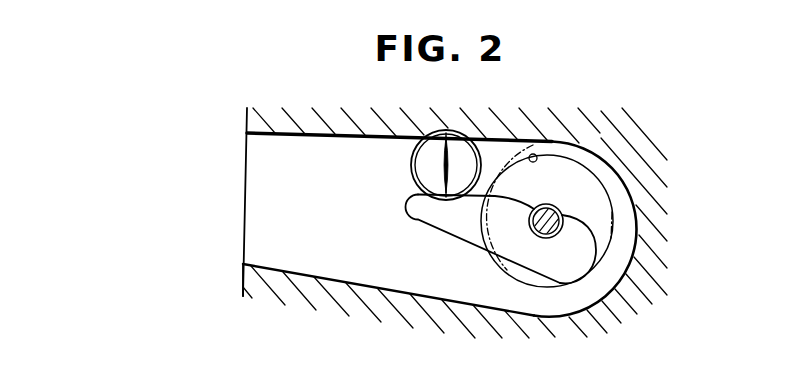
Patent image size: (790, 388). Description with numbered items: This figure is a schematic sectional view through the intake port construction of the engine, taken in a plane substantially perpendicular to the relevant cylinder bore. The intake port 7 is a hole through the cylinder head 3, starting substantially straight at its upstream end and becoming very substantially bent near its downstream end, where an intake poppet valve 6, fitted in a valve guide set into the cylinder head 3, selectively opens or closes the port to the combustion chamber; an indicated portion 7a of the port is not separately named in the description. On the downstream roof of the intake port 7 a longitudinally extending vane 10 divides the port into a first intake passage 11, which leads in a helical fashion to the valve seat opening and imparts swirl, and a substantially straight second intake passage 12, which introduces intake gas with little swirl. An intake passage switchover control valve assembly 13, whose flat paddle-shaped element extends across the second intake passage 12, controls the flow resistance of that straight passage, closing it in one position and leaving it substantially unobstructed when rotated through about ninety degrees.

The cylinder head 3 is at (256, 280).
The intake poppet valve 6 is at (551, 206).
The intake port 7 is at (258, 181).
The stop pin 7a is at (534, 153).
The vane 10 is at (462, 231).
The first intake passage 11 is at (501, 297).
The second intake passage 12 is at (498, 150).
The intake passage switchover control valve assembly 13 is at (443, 162).